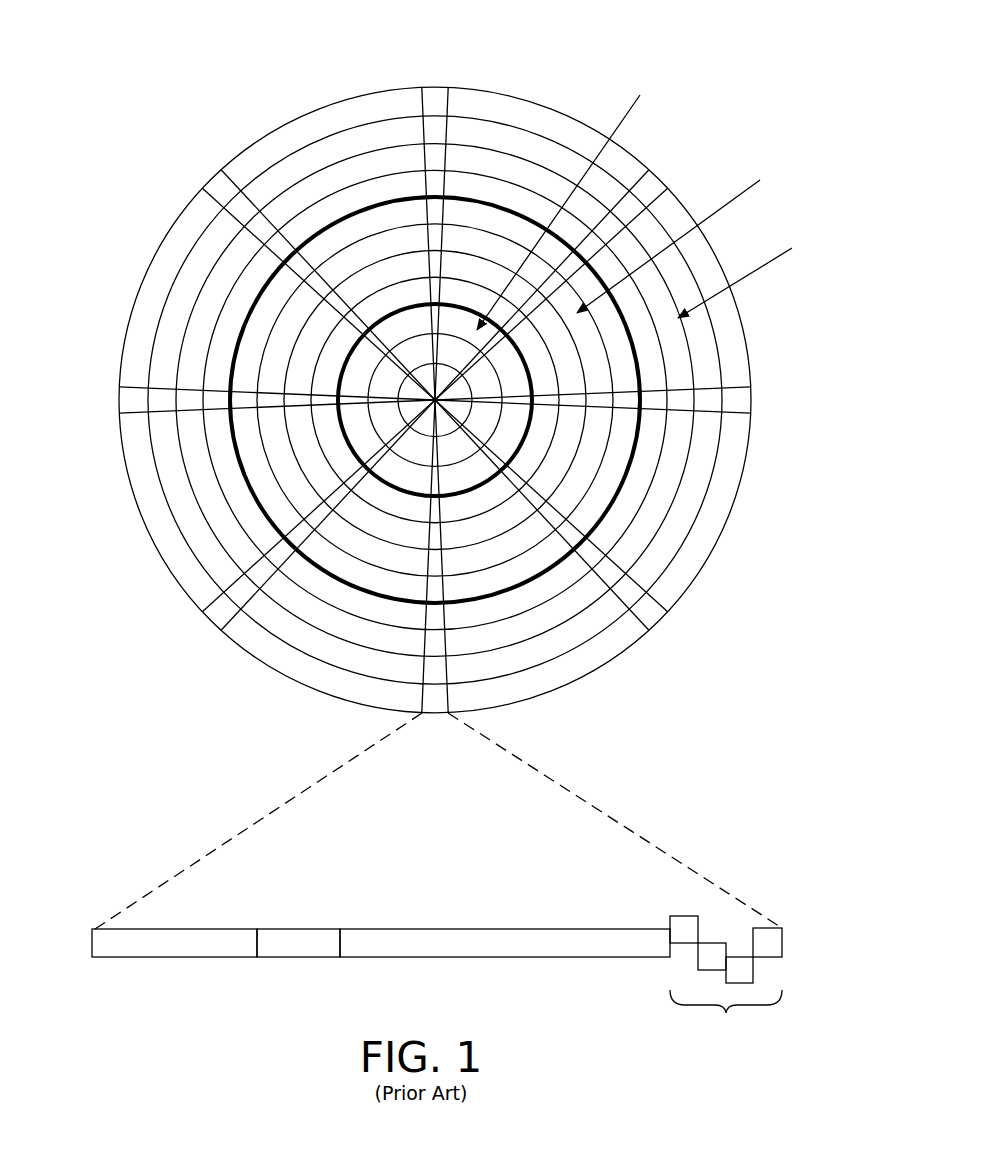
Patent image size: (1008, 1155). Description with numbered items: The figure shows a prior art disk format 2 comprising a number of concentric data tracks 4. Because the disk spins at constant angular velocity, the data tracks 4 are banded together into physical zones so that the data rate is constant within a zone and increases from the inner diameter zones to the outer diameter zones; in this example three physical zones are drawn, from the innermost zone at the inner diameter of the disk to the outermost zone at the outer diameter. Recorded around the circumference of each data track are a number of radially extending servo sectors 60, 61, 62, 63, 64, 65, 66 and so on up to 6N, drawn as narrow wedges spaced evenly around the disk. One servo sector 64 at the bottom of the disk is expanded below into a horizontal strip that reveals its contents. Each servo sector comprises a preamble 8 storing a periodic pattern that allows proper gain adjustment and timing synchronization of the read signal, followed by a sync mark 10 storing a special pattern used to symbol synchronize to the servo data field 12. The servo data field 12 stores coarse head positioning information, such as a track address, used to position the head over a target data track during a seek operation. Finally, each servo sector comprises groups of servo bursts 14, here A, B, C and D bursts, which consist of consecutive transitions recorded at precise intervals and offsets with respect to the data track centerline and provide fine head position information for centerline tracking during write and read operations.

The disk format 2 is at (205, 93).
The data tracks 4 is at (563, 130).
The servo sector 60 is at (436, 97).
The servo sector 61 is at (650, 185).
The servo sector 62 is at (743, 402).
The servo sector 63 is at (655, 615).
The servo sector 64 is at (295, 787).
The servo sector 65 is at (212, 612).
The servo sector 66 is at (120, 398).
The servo sector 6N is at (218, 185).
The preamble 8 is at (155, 957).
The sync mark 10 is at (296, 957).
The servo data field 12 is at (490, 957).
The servo bursts 14 is at (660, 898).